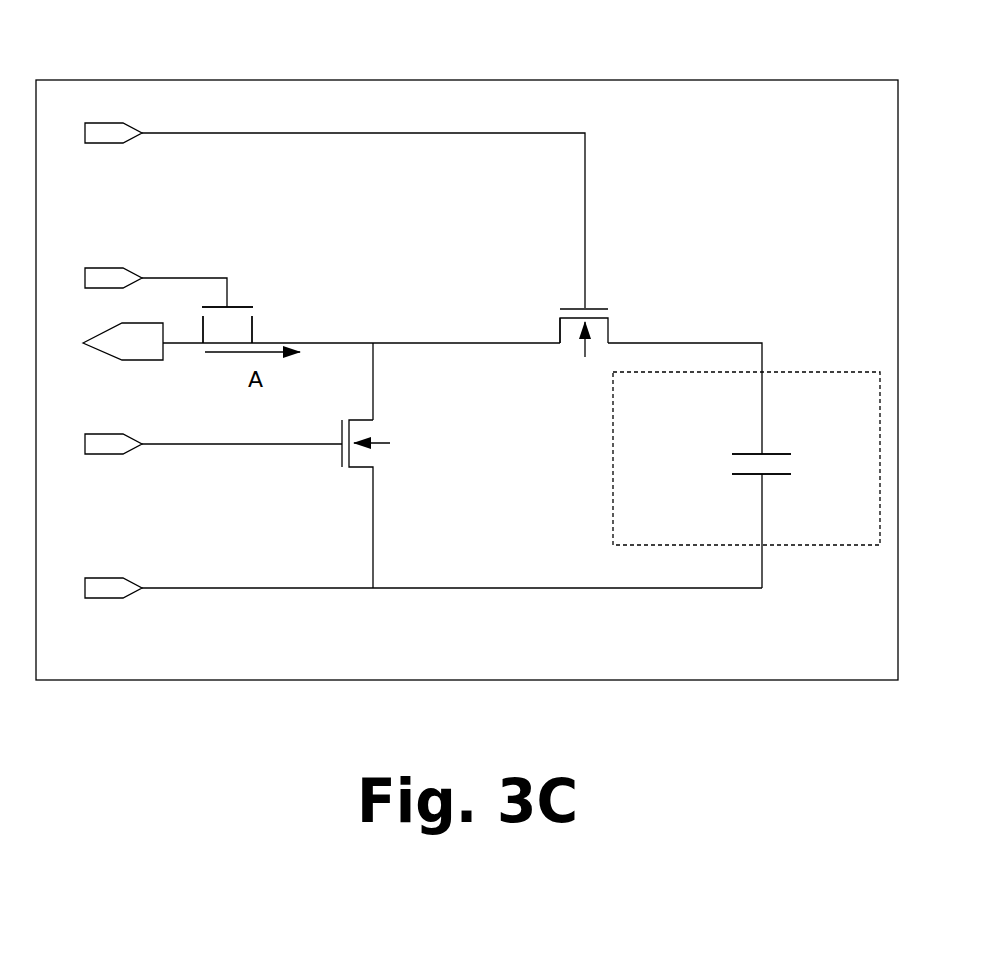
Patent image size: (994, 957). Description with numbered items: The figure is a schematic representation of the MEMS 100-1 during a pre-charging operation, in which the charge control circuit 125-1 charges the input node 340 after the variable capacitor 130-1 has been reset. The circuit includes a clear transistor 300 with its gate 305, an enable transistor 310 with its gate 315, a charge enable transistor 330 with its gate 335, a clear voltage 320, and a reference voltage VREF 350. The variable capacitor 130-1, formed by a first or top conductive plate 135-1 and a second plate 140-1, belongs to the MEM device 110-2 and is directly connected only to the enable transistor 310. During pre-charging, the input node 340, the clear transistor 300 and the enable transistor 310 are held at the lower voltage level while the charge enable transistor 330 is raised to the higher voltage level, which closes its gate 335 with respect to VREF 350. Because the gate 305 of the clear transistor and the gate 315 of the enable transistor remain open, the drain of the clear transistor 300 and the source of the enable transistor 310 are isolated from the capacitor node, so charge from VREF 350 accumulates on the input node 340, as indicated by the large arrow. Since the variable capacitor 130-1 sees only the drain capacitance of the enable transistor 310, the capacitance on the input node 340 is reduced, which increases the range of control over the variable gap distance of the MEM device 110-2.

The MEMS 100-1 is at (470, 69).
The charge enable transistor 330 is at (255, 272).
The gate of charge enable transistor 335 is at (259, 310).
The input node 340 is at (366, 342).
The gate of enable transistor 315 is at (558, 316).
The enable transistor 310 is at (621, 306).
The MEM device 110-2 is at (755, 318).
The variable capacitor 130-1 is at (745, 441).
The first or top conductive plate 135-1 is at (745, 458).
The second plate 140-1 is at (790, 477).
The clear transistor 300 is at (393, 499).
The gate of clear transistor 305 is at (341, 467).
The clear voltage 320 is at (120, 578).
The VREF 350 is at (122, 360).
The charge control circuit 125-1 is at (371, 594).